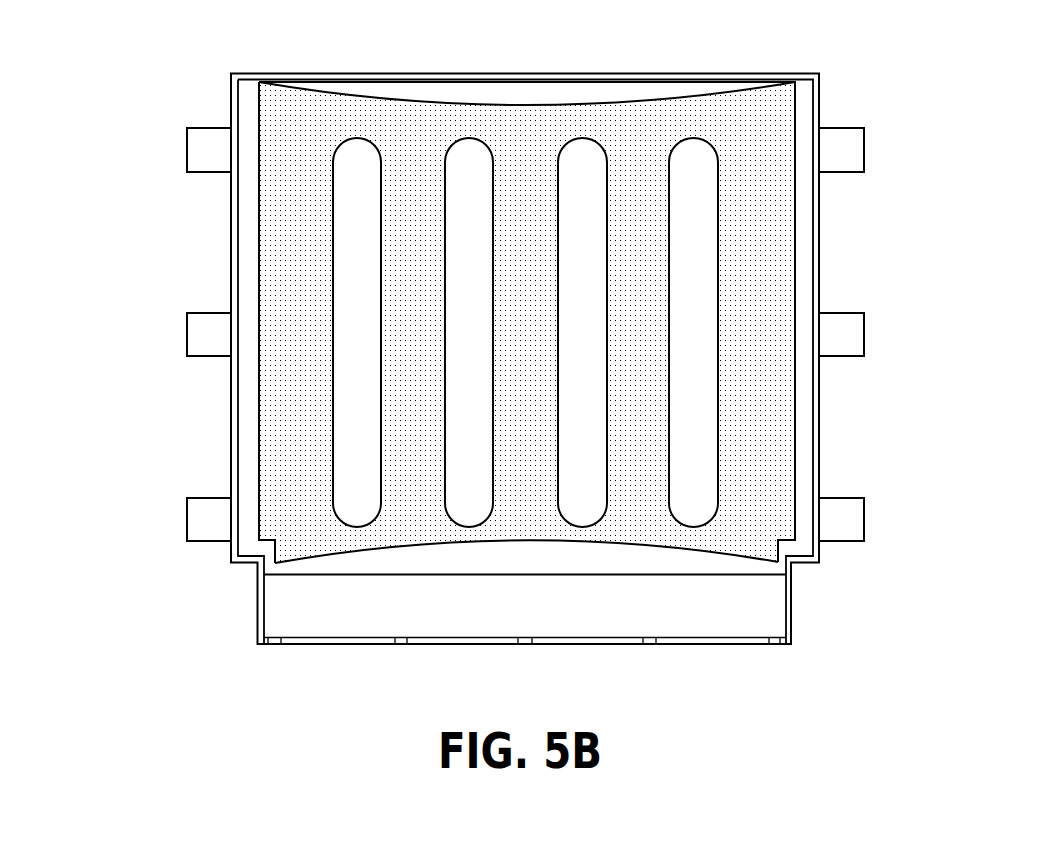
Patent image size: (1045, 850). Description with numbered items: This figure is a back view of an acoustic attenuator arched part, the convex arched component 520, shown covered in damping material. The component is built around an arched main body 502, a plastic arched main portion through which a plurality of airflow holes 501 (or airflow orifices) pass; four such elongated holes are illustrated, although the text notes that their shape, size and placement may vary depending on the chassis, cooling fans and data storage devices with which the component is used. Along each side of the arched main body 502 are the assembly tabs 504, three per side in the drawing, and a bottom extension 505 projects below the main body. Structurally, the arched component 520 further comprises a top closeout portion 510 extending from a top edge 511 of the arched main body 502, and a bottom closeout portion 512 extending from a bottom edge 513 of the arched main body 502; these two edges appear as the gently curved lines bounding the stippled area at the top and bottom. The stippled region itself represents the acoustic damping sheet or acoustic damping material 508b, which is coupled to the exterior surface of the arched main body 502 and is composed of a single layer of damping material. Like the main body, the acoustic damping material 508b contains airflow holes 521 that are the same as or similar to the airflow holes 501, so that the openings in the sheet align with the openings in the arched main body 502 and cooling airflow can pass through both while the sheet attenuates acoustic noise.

The airflow holes 501 is at (363, 160).
The arched main body 502 is at (250, 110).
The assembly tabs 504 is at (188, 522).
The bottom extension 505 is at (333, 620).
The acoustic damping material 508b is at (765, 508).
The top closeout portion 510 is at (438, 93).
The top edge 511 is at (527, 103).
The bottom closeout portion 512 is at (677, 560).
The bottom edge 513 is at (705, 555).
The convex arched component 520 is at (120, 194).
The airflow holes 521 is at (677, 527).